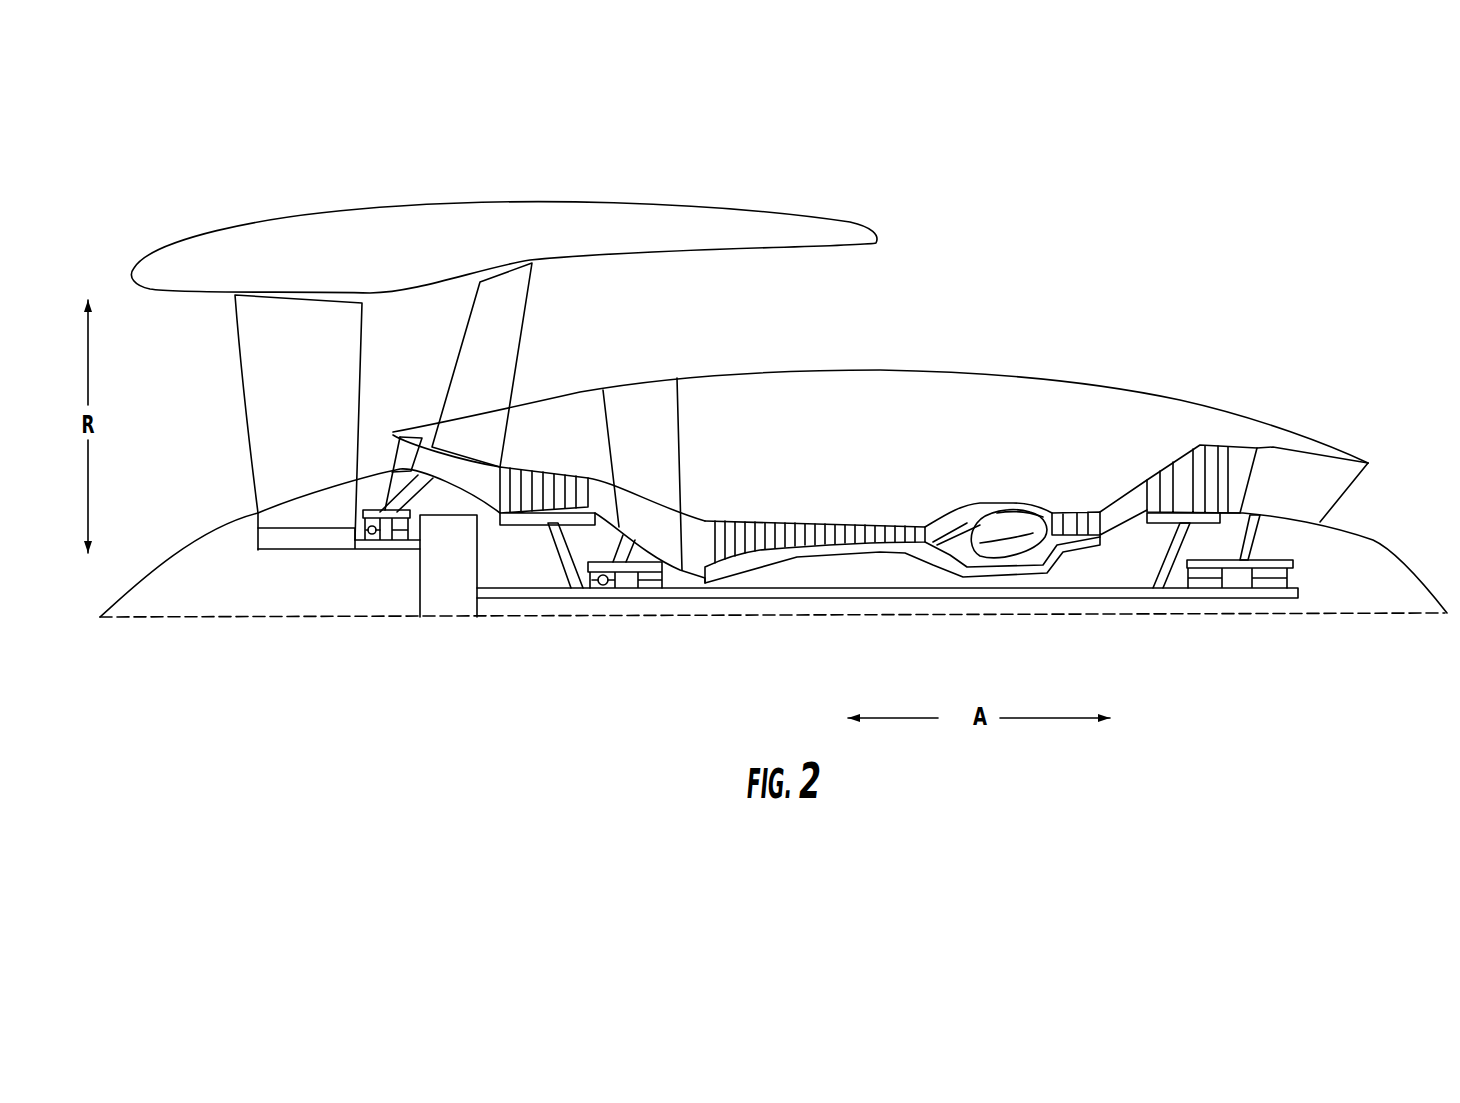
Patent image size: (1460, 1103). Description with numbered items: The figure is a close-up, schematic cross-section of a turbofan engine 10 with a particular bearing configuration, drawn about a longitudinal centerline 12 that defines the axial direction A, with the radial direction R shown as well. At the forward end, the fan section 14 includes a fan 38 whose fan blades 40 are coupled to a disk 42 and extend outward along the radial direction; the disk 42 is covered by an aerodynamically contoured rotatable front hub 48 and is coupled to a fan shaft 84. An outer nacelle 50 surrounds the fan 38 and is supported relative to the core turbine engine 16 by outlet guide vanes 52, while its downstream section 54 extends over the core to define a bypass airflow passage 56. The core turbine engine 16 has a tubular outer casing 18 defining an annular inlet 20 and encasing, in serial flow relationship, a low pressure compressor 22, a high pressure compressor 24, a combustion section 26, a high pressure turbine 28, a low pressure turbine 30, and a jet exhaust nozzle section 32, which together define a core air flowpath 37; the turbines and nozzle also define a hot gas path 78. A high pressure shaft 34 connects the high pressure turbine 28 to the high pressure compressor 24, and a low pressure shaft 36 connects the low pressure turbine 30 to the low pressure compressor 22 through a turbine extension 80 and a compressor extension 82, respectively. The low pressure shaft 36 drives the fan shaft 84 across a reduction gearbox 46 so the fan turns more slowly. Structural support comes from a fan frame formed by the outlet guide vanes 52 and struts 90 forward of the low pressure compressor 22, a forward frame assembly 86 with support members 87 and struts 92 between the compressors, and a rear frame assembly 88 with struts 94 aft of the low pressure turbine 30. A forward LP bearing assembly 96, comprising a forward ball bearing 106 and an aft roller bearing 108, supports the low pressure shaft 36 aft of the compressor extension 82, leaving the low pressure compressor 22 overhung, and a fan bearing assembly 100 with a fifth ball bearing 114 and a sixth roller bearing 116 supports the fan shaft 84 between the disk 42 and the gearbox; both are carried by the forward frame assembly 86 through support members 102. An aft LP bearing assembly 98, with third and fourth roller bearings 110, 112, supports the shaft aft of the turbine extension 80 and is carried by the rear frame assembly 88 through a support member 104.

The turbofan engine 10 is at (935, 205).
The longitudinal centerline 12 is at (1397, 614).
The fan section 14 is at (376, 245).
The core turbine engine 16 is at (923, 403).
The outer casing 18 is at (1053, 378).
The annular inlet 20 is at (385, 438).
The low pressure compressor 22 is at (543, 466).
The high pressure compressor 24 is at (807, 517).
The combustion section 26 is at (1018, 520).
The high pressure turbine 28 is at (1081, 505).
The low pressure turbine 30 is at (1201, 444).
The jet exhaust nozzle section 32 is at (1294, 459).
The high pressure shaft 34 is at (883, 553).
The low pressure shaft 36 is at (960, 598).
The core air flowpath 37 is at (693, 531).
The fan 38 is at (177, 364).
The fan blades 40 is at (236, 398).
The disk 42 is at (262, 544).
The reduction gearbox 46 is at (432, 588).
The front hub 48 is at (152, 570).
The outer nacelle 50 is at (512, 215).
The outlet guide vanes 52 is at (524, 304).
The downstream section 54 is at (763, 222).
The bypass airflow passage 56 is at (775, 325).
The hot gas path 78 is at (1121, 495).
The turbine extension 80 is at (1167, 553).
The compressor extension 82 is at (560, 562).
The fan shaft 84 is at (393, 537).
The forward frame assembly 86 is at (643, 410).
The support members 87 is at (677, 393).
The rear frame assembly 88 is at (1318, 474).
The struts 90 is at (459, 467).
The struts 92 is at (653, 520).
The struts 94 is at (1273, 447).
The forward LP bearing assembly 96 is at (622, 601).
The aft LP bearing assembly 98 is at (1243, 600).
The fan bearing assembly 100 is at (371, 497).
The support members 102 is at (407, 493).
The support member 104 is at (1257, 535).
The first bearing 106 is at (597, 584).
The second bearing 108 is at (653, 582).
The third bearing 110 is at (1210, 578).
The fourth bearing 112 is at (1292, 583).
The fifth bearing 114 is at (365, 543).
The sixth bearing 116 is at (400, 533).